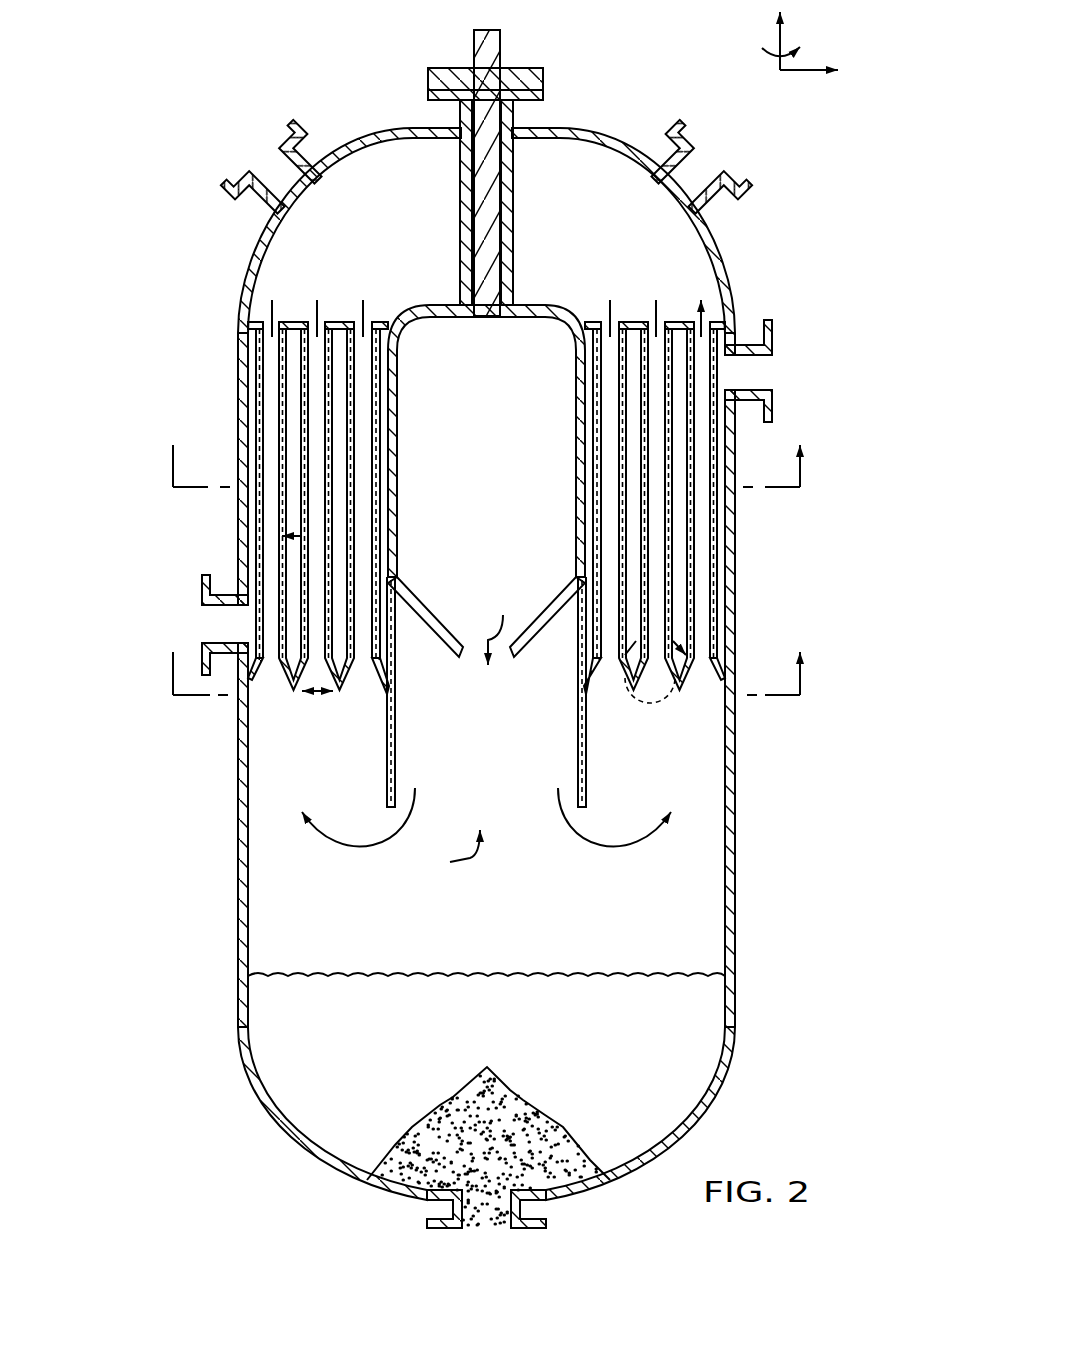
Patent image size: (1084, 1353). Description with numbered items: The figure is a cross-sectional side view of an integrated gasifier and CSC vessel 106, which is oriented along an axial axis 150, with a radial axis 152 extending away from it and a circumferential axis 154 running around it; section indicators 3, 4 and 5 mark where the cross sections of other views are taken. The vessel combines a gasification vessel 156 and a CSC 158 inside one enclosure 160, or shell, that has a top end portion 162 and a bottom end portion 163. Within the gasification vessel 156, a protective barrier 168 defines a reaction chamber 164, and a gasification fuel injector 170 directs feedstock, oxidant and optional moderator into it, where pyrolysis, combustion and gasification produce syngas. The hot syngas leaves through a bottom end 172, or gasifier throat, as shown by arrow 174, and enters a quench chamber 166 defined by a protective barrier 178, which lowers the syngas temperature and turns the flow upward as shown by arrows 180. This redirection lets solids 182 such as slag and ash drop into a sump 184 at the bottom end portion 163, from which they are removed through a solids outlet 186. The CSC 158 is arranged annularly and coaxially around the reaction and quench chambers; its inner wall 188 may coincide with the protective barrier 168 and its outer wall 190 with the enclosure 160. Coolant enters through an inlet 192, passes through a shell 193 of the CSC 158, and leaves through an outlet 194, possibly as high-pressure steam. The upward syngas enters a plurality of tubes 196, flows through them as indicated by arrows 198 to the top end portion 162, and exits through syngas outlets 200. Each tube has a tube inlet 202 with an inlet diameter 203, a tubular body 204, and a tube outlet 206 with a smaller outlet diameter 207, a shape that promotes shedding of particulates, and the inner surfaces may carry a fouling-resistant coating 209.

The integrated gasifier and CSC vessel 106 is at (235, 78).
The axial axis 150 is at (778, 70).
The radial axis 152 is at (800, 71).
The circumferential axis 154 is at (766, 46).
The gasification vessel 156 is at (372, 118).
The CSC 158 is at (255, 388).
The enclosure 160 is at (243, 257).
The top end portion 162 is at (590, 123).
The bottom end portion 163 is at (743, 998).
The reaction chamber 164 is at (437, 340).
The quench chamber 166 is at (444, 856).
The protective barrier 168 is at (560, 310).
The gasification fuel injector 170 is at (490, 30).
The bottom end 172 is at (432, 613).
The arrow 174 is at (504, 623).
The protective barrier 178 is at (397, 740).
The arrows 180 is at (370, 847).
The solids 182 is at (507, 1100).
The sump 184 is at (552, 985).
The solids outlet 186 is at (503, 1238).
The inner wall 188 is at (590, 320).
The outer wall 190 is at (247, 498).
The inlet 192 is at (202, 627).
The shell 193 is at (300, 435).
The outlet 194 is at (775, 370).
The tubes 196 is at (717, 583).
The arrows 198 is at (317, 310).
The syngas outlets 200 is at (267, 155).
The tube inlet 202 is at (654, 692).
The inlet diameter 203 is at (318, 694).
The tubular body 204 is at (657, 540).
The tube outlet 206 is at (664, 316).
The outlet diameter 207 is at (257, 536).
The coating 209 is at (623, 682).
The section line 3- 3 is at (487, 453).
The section line 4- 4 is at (488, 658).
The section line 5- 5 is at (655, 633).